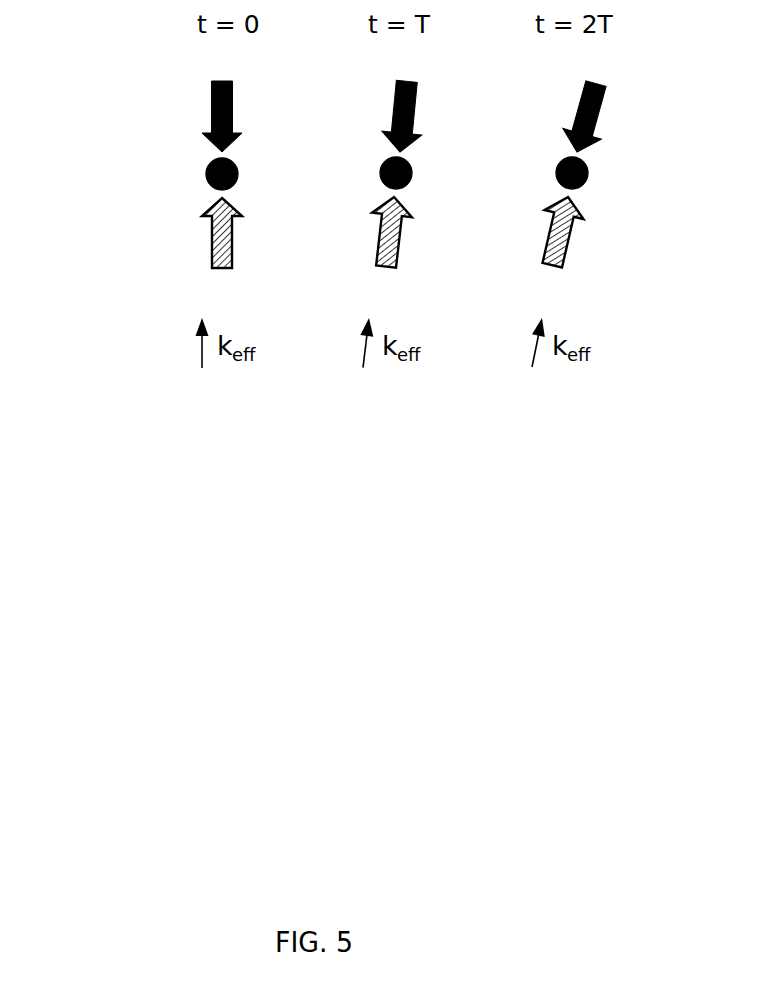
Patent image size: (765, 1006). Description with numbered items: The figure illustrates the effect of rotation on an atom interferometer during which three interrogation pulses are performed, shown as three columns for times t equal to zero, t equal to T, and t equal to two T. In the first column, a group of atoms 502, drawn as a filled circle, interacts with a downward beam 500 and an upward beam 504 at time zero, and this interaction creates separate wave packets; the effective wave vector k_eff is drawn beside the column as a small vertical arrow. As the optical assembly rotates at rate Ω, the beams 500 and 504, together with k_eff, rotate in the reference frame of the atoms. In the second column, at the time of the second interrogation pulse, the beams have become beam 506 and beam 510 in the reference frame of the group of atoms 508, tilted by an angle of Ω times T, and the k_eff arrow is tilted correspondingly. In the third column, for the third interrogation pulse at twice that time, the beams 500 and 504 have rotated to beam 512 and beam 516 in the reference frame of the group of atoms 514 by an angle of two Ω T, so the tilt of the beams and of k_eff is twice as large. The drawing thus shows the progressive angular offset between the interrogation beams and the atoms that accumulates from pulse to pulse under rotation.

The beam 500 is at (206, 112).
The group of atoms 502 is at (205, 176).
The beam 504 is at (206, 237).
The beam 506 is at (391, 116).
The group of atoms 508 is at (378, 172).
The beam 510 is at (374, 240).
The beam 512 is at (571, 117).
The group of atoms 514 is at (550, 170).
The beam 516 is at (545, 230).